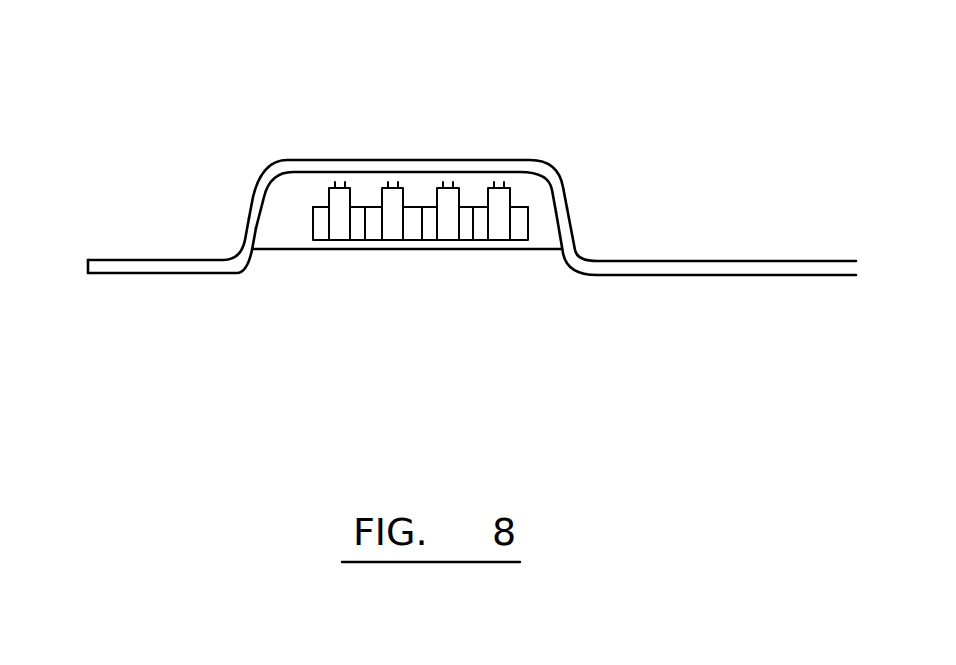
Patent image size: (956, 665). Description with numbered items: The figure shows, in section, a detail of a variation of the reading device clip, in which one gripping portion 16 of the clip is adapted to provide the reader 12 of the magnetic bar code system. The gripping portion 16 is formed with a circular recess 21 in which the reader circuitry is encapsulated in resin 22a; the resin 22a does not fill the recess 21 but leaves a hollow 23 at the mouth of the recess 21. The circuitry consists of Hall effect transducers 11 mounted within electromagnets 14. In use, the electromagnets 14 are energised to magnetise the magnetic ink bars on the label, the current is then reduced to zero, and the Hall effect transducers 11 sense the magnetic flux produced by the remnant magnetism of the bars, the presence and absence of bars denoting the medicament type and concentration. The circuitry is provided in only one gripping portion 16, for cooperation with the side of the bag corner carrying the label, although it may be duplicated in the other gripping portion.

The gripping portion 16 is at (145, 258).
The circular recess 21 is at (478, 158).
The resin 22a is at (535, 193).
The reader 12 is at (572, 225).
The hollow 23 is at (280, 262).
The electromagnet 14 is at (359, 237).
The Hall effect transducer 11 is at (343, 225).